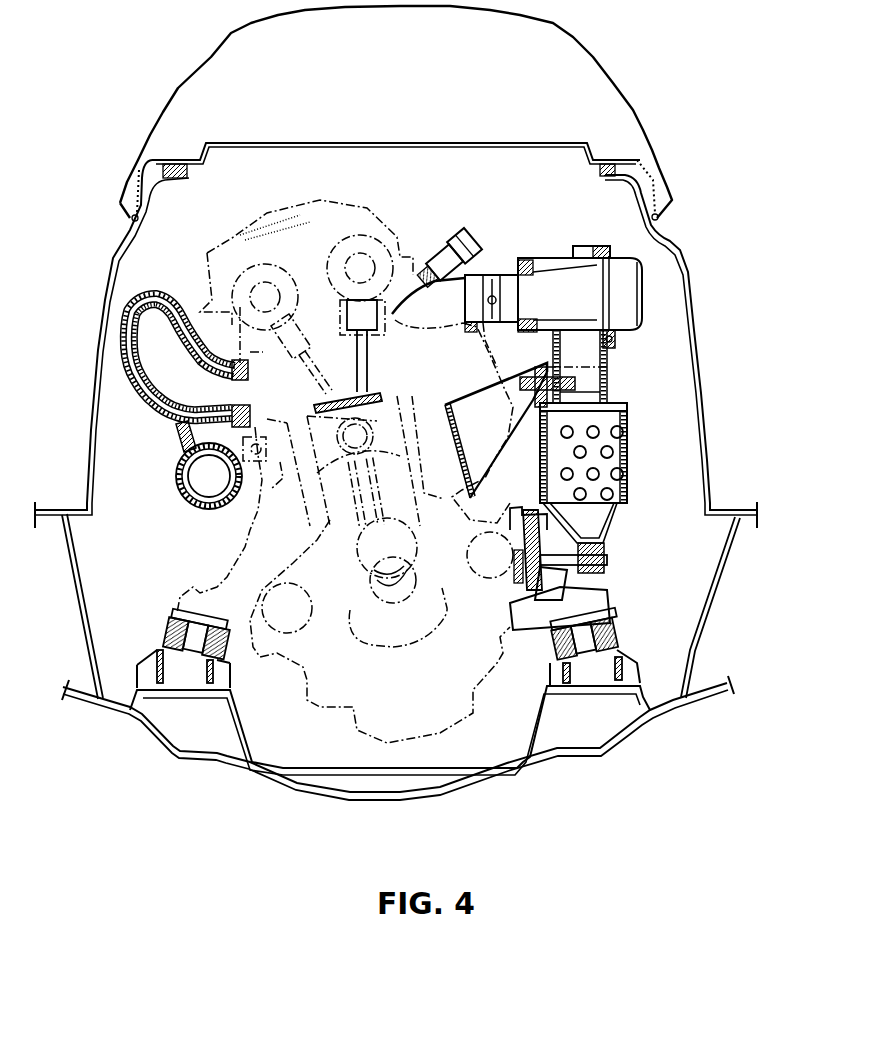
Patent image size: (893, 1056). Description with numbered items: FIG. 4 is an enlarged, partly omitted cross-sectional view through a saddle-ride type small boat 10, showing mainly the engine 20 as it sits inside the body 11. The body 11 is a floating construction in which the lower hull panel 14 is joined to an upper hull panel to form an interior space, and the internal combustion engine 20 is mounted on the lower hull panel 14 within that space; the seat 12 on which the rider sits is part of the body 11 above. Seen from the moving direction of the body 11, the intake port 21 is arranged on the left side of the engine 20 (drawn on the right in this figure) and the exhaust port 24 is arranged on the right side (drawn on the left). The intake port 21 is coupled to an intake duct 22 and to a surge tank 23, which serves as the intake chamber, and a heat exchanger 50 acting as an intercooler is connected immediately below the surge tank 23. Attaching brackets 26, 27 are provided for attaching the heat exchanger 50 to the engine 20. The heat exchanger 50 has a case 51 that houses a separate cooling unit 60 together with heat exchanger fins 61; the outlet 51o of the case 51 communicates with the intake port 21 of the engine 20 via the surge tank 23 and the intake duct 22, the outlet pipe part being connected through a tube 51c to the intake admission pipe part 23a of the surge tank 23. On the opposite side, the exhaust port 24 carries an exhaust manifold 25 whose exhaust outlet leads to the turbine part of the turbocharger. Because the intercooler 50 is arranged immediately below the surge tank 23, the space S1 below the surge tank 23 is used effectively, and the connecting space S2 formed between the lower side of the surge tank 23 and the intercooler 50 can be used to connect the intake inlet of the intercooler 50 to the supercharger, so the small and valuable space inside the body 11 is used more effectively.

The small boat 10 is at (642, 112).
The body 11 is at (87, 293).
The seat 12 is at (594, 56).
The lower hull panel 14 is at (600, 760).
The engine 20 is at (414, 220).
The intake port 21 is at (466, 276).
The intake duct 22 is at (505, 265).
The surge tank 23 is at (555, 257).
The intake admission pipe part 23a is at (616, 338).
The exhaust port 24 is at (218, 350).
The exhaust manifold 25 is at (145, 407).
The attaching bracket 26 is at (473, 393).
The attaching bracket 27 is at (570, 573).
The heat exchanger 50 is at (637, 430).
The case 51 is at (630, 457).
The tube 51c is at (610, 363).
The outlet 51o is at (594, 392).
The cooling unit 60 is at (599, 500).
The heat exchanger fins 61 is at (625, 478).
The space S1 is at (629, 515).
The connecting space S2 is at (645, 383).